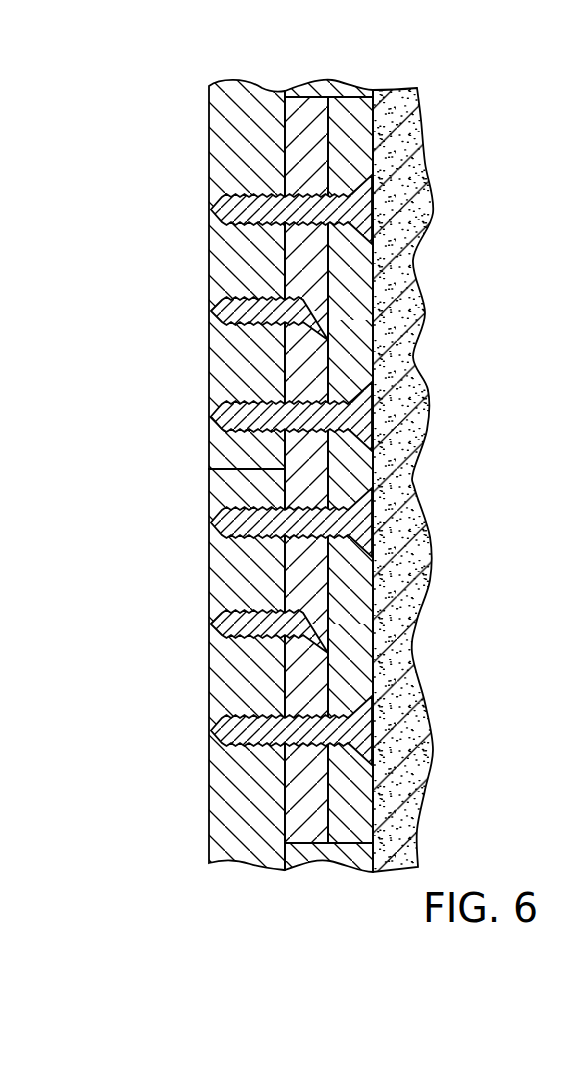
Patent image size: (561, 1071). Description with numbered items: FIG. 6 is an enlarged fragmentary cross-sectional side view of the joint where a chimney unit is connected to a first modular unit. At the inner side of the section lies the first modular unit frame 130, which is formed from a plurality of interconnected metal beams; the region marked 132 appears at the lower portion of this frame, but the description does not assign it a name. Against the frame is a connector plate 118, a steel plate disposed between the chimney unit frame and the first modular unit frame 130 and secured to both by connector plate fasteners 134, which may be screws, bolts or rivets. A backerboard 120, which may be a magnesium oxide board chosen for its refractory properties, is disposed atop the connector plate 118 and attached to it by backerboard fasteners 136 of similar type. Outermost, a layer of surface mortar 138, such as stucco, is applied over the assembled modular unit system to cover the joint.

The connector plate 118 is at (290, 135).
The backerboard 120 is at (371, 150).
The first modular unit frame 130 is at (212, 453).
The lower wall portion 132 is at (212, 494).
The connector plate fasteners 134 is at (210, 311).
The backerboard fasteners 136 is at (210, 210).
The surface mortar 138 is at (414, 200).